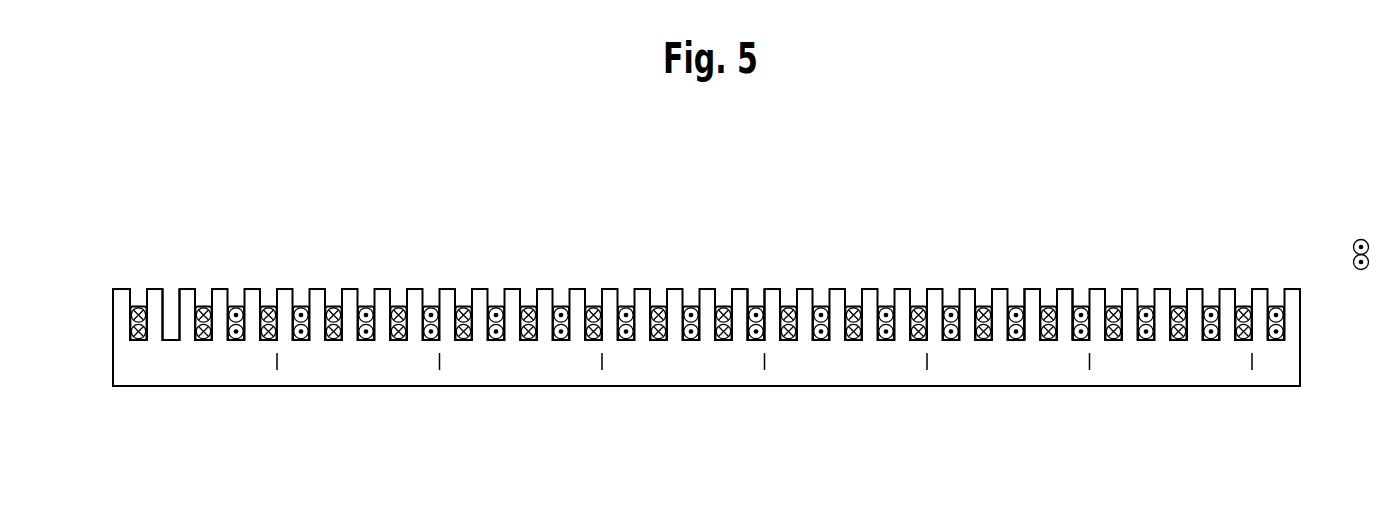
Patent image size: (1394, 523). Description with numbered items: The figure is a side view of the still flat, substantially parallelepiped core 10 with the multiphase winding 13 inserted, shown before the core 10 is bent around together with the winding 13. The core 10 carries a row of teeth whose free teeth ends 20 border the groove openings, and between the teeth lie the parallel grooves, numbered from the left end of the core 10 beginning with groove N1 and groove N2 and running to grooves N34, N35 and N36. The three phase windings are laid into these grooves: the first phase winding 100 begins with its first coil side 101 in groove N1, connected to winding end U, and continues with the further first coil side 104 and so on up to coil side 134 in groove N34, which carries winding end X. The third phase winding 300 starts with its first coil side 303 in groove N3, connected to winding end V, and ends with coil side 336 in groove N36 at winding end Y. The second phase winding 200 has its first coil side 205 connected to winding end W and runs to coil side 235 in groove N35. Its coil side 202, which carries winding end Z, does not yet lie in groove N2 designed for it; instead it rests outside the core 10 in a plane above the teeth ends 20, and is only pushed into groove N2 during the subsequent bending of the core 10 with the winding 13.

The core 10 is at (645, 262).
The multiphase winding 13 is at (758, 290).
The teeth ends 20 is at (1067, 297).
The first phase winding 100 is at (133, 282).
The first coil side 101 is at (138, 340).
The further first coil side 104 is at (237, 340).
The coil side 134 is at (1211, 340).
The second phase winding 200 is at (302, 331).
The coil side 202 is at (1360, 237).
The first coil side 205 is at (268, 340).
The coil side 235 is at (1245, 340).
The third phase winding 300 is at (211, 351).
The first coil side 303 is at (203, 340).
The coil side 336 is at (1281, 340).
The groove N1 is at (134, 330).
The groove N2 is at (172, 296).
The groove N34 is at (1176, 327).
The groove N35 is at (1238, 329).
The groove N36 is at (1285, 366).